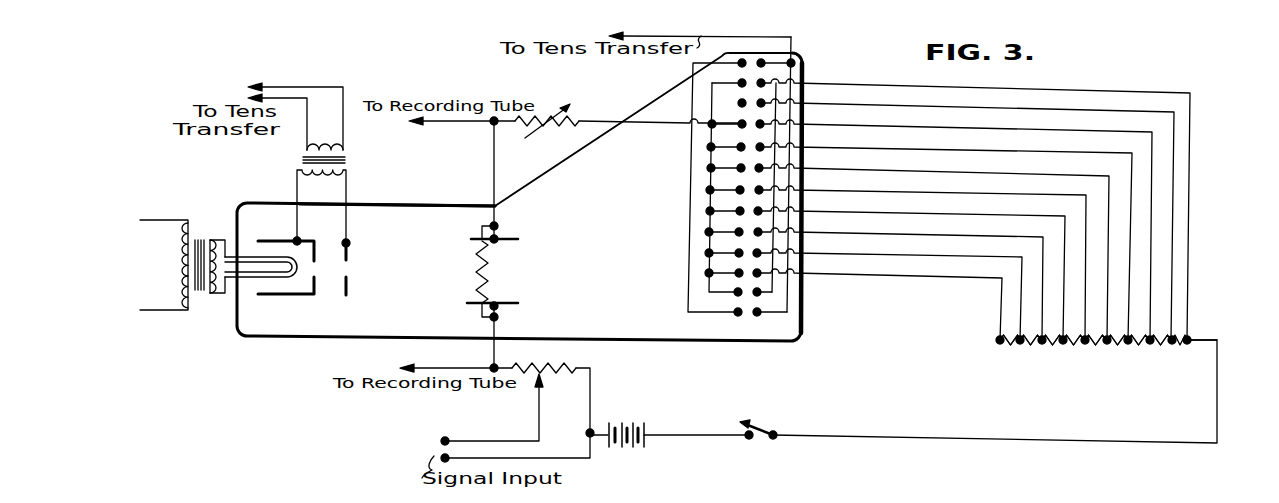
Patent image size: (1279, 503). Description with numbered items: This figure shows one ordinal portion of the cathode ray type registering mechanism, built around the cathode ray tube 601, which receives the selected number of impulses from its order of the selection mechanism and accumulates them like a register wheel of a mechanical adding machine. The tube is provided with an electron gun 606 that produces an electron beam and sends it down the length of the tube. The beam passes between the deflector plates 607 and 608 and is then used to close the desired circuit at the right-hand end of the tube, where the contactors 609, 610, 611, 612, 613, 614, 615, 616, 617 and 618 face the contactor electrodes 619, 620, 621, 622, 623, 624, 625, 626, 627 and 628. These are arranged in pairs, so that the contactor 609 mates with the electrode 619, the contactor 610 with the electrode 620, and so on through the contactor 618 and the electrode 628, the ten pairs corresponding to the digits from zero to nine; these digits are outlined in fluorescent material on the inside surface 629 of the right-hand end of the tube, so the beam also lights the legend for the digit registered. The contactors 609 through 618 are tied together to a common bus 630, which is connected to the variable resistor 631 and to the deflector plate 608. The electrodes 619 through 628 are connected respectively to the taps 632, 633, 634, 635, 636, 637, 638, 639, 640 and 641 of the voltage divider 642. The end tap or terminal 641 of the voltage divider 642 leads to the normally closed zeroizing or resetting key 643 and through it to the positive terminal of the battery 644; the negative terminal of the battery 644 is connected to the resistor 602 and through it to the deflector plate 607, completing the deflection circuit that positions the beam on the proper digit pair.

The cathode ray tube 601 is at (424, 204).
The resistor 602 is at (574, 369).
The electron gun 606 is at (280, 235).
The deflector plate 607 is at (516, 304).
The deflector plate 608 is at (506, 240).
The contactor 609 is at (737, 275).
The contactor 610 is at (737, 255).
The contactor 611 is at (737, 234).
The contactor 612 is at (738, 213).
The contactor 613 is at (738, 192).
The contactor 614 is at (739, 170).
The contactor 615 is at (739, 149).
The contactor 616 is at (740, 126).
The contactor 617 is at (740, 104).
The contactor 618 is at (741, 81).
The contactor electrode 619 is at (873, 298).
The contactor electrode 620 is at (883, 288).
The contactor electrode 621 is at (893, 278).
The contactor electrode 622 is at (904, 267).
The contactor electrode 623 is at (915, 257).
The contactor electrode 624 is at (926, 246).
The contactor electrode 625 is at (938, 235).
The contactor electrode 626 is at (948, 224).
The contactor electrode 627 is at (959, 213).
The contactor electrode 628 is at (967, 203).
The inside surface 629 is at (805, 68).
The bus 630 is at (690, 283).
The variable resistor 631 is at (547, 129).
The tap 632 is at (999, 337).
The tap 633 is at (1008, 346).
The tap 634 is at (1040, 348).
The tap 635 is at (1076, 346).
The tap 636 is at (1094, 348).
The tap 637 is at (1132, 346).
The tap 638 is at (1142, 348).
The tap 639 is at (1168, 352).
The tap 640 is at (1176, 346).
The tap 641 is at (1191, 339).
The voltage divider 642 is at (992, 343).
The zeroizing key 643 is at (763, 432).
The battery 644 is at (630, 425).